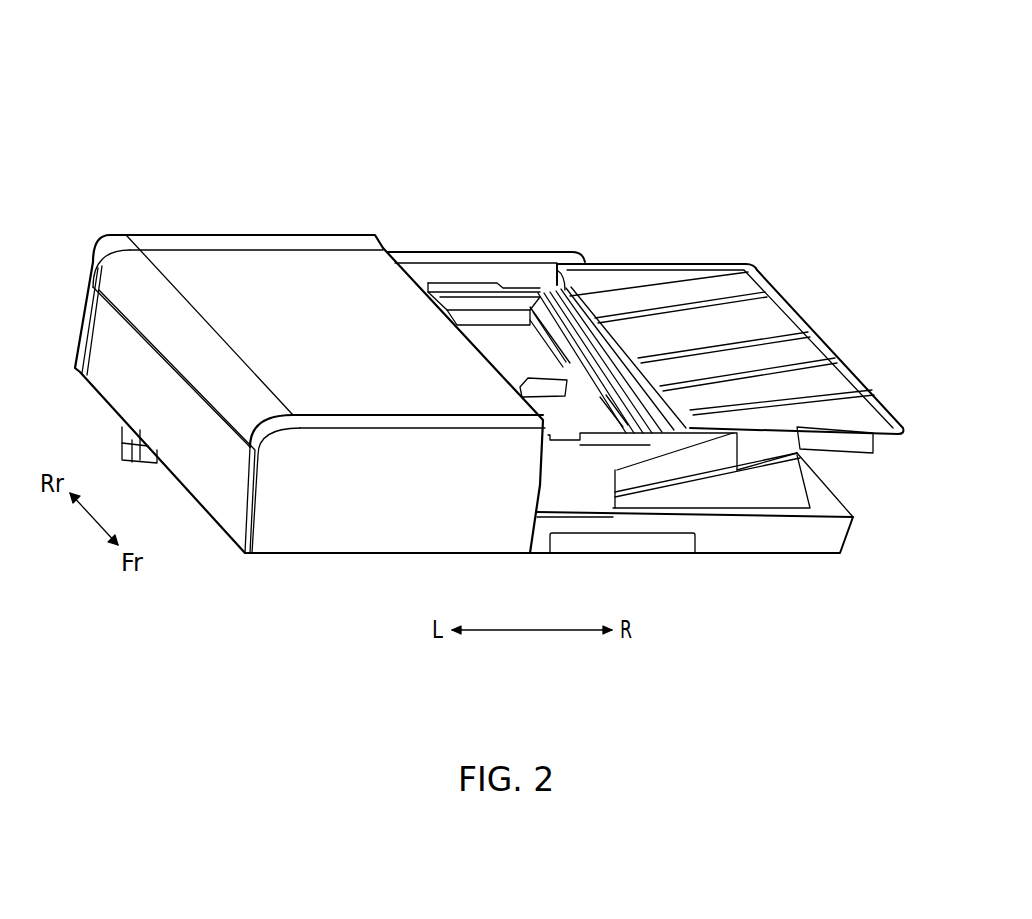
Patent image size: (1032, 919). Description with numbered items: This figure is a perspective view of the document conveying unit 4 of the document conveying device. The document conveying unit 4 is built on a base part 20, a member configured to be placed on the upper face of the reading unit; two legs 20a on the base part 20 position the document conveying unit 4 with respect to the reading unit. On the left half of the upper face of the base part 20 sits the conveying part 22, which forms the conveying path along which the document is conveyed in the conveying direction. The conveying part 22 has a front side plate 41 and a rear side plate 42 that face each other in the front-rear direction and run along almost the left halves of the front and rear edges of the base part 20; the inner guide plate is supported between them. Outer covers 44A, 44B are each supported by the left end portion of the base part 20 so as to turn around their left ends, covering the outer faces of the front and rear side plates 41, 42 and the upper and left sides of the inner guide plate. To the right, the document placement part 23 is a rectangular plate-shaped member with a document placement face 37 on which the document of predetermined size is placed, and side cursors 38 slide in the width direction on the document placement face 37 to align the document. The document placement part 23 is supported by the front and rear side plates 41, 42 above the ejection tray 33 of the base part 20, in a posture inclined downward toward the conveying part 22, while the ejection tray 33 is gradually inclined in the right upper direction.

The document conveying unit 4 is at (412, 134).
The conveying part 22 is at (233, 234).
The rear side plate 42 is at (279, 237).
The outer cover 44A is at (185, 280).
The outer cover 44B is at (177, 356).
The front side plate 41 is at (417, 512).
The leg 20a is at (138, 458).
The side cursor 38 is at (483, 307).
The document placement part 23 is at (638, 262).
The document placement face 37 is at (703, 343).
The ejection tray 33 is at (690, 490).
The base part 20 is at (733, 555).